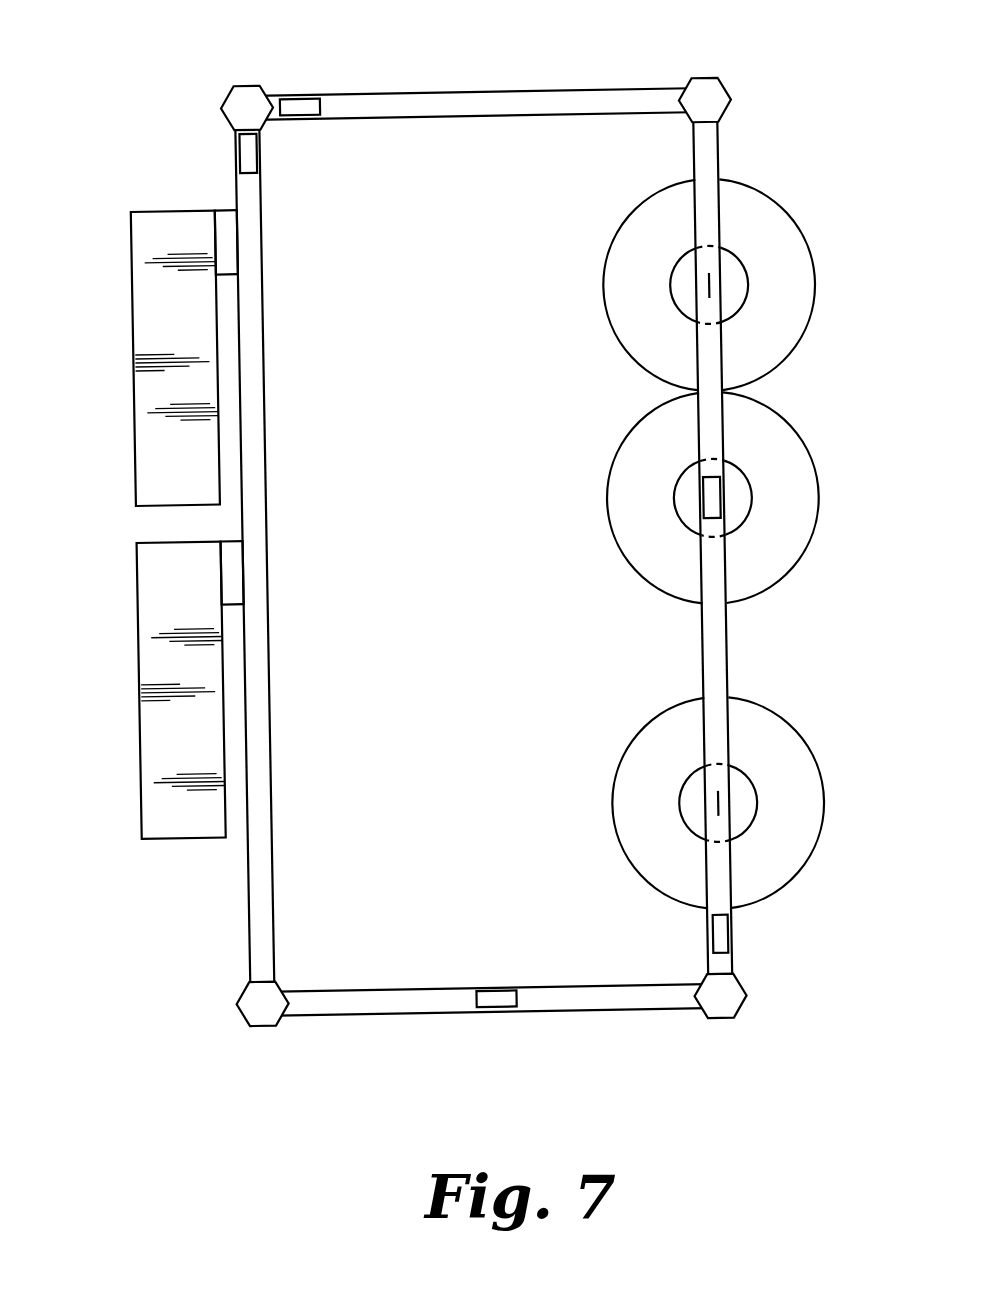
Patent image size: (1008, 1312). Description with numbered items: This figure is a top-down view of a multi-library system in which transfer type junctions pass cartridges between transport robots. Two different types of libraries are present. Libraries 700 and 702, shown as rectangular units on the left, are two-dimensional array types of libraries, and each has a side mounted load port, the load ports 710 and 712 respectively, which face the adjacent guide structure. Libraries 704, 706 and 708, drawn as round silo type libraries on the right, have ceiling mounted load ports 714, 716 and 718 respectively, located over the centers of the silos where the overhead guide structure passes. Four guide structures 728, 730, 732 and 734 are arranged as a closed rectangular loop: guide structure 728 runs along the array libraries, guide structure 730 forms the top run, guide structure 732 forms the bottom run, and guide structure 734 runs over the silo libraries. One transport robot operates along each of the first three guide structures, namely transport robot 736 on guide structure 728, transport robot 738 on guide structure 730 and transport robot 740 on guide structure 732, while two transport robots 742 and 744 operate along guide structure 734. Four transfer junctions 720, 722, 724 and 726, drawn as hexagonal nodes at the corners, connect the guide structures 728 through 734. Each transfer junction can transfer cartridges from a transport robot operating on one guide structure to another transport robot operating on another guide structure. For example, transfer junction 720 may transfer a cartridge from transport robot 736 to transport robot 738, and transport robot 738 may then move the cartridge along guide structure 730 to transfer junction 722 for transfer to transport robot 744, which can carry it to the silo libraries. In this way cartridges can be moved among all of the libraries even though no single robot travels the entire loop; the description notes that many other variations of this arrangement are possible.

The library 700 is at (145, 273).
The library 702 is at (152, 600).
The library 704 is at (615, 275).
The library 706 is at (618, 488).
The library 708 is at (625, 788).
The side mounted load port 710 is at (228, 245).
The side mounted load port 712 is at (232, 573).
The ceiling mounted load port 714 is at (677, 287).
The ceiling mounted load port 716 is at (682, 500).
The ceiling mounted load port 718 is at (688, 802).
The transfer junction 720 is at (247, 93).
The transfer junction 722 is at (704, 92).
The transfer junction 724 is at (262, 1015).
The transfer junction 726 is at (724, 1002).
The guide structure 728 is at (265, 878).
The guide structure 730 is at (417, 105).
The guide structure 732 is at (620, 993).
The guide structure 734 is at (715, 643).
The transport robot 736 is at (258, 155).
The transport robot 738 is at (300, 98).
The transport robot 740 is at (499, 988).
The transport robot 742 is at (728, 932).
The transport robot 744 is at (720, 497).